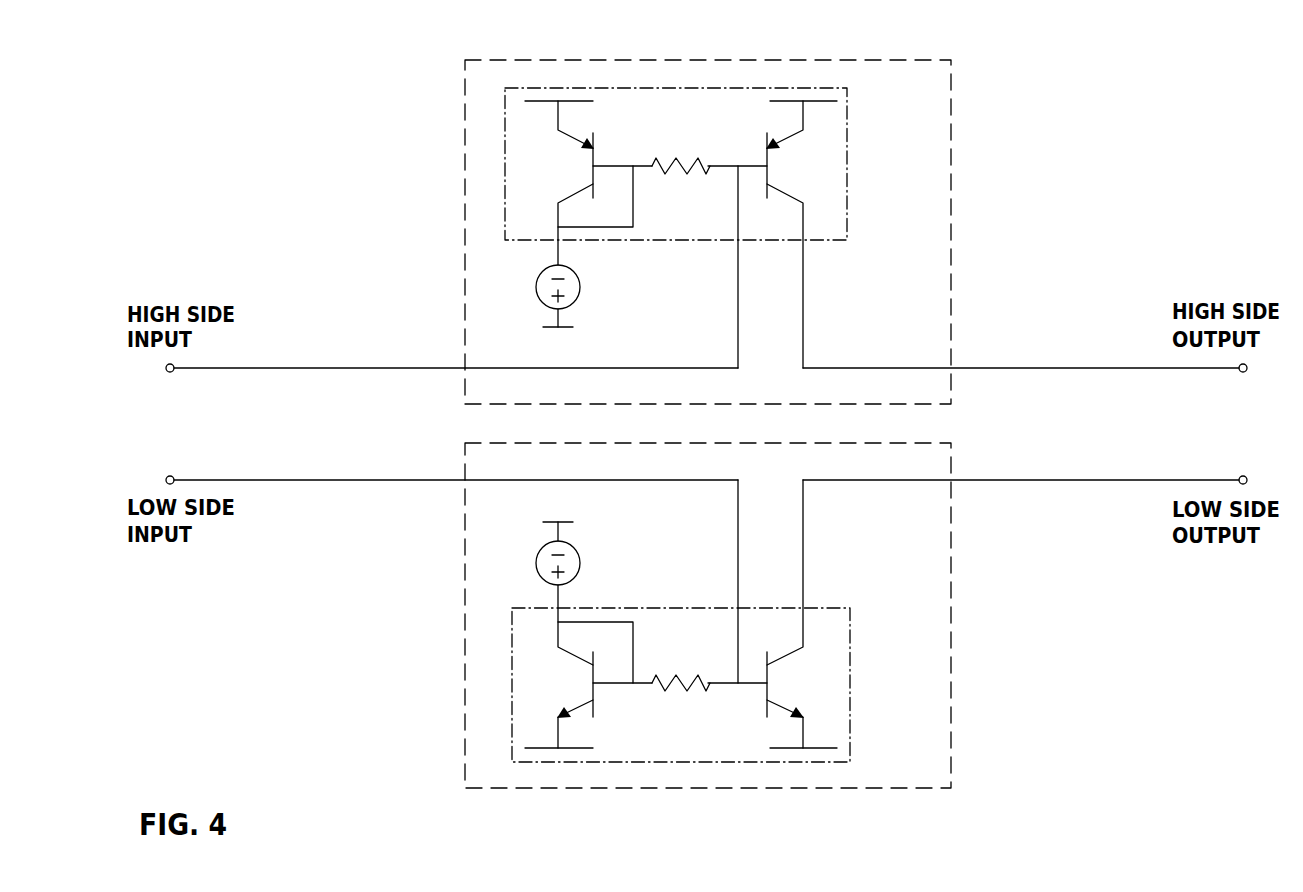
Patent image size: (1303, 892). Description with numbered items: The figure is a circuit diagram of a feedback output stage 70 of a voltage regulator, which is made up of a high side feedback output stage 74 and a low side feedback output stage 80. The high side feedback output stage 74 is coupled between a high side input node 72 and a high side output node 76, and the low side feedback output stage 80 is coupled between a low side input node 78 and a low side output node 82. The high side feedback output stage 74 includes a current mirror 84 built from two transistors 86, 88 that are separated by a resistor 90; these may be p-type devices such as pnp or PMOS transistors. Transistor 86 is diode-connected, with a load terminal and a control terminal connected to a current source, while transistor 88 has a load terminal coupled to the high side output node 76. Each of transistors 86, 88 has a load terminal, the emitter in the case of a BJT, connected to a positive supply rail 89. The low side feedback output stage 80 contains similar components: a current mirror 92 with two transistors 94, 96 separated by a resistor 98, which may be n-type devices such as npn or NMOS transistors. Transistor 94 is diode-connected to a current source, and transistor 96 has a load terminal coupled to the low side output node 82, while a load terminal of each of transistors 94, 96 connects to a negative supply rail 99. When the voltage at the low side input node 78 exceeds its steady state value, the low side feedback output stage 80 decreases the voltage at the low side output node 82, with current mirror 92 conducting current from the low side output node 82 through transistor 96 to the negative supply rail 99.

The feedback output stage 70 is at (308, 179).
The high side input node 72 is at (171, 373).
The high side feedback output stage 74 is at (946, 406).
The high side output node 76 is at (1243, 373).
The low side input node 78 is at (171, 476).
The low side feedback output stage 80 is at (474, 442).
The low side output node 82 is at (1243, 476).
The current mirror 84 is at (505, 186).
The transistor 86 is at (599, 134).
The transistor 88 is at (811, 158).
The positive supply rail 89 is at (570, 100).
The resistor 90 is at (700, 196).
The current mirror 92 is at (512, 645).
The transistor 94 is at (609, 716).
The transistor 96 is at (810, 690).
The resistor 98 is at (693, 656).
The negative supply rail 99 is at (568, 327).